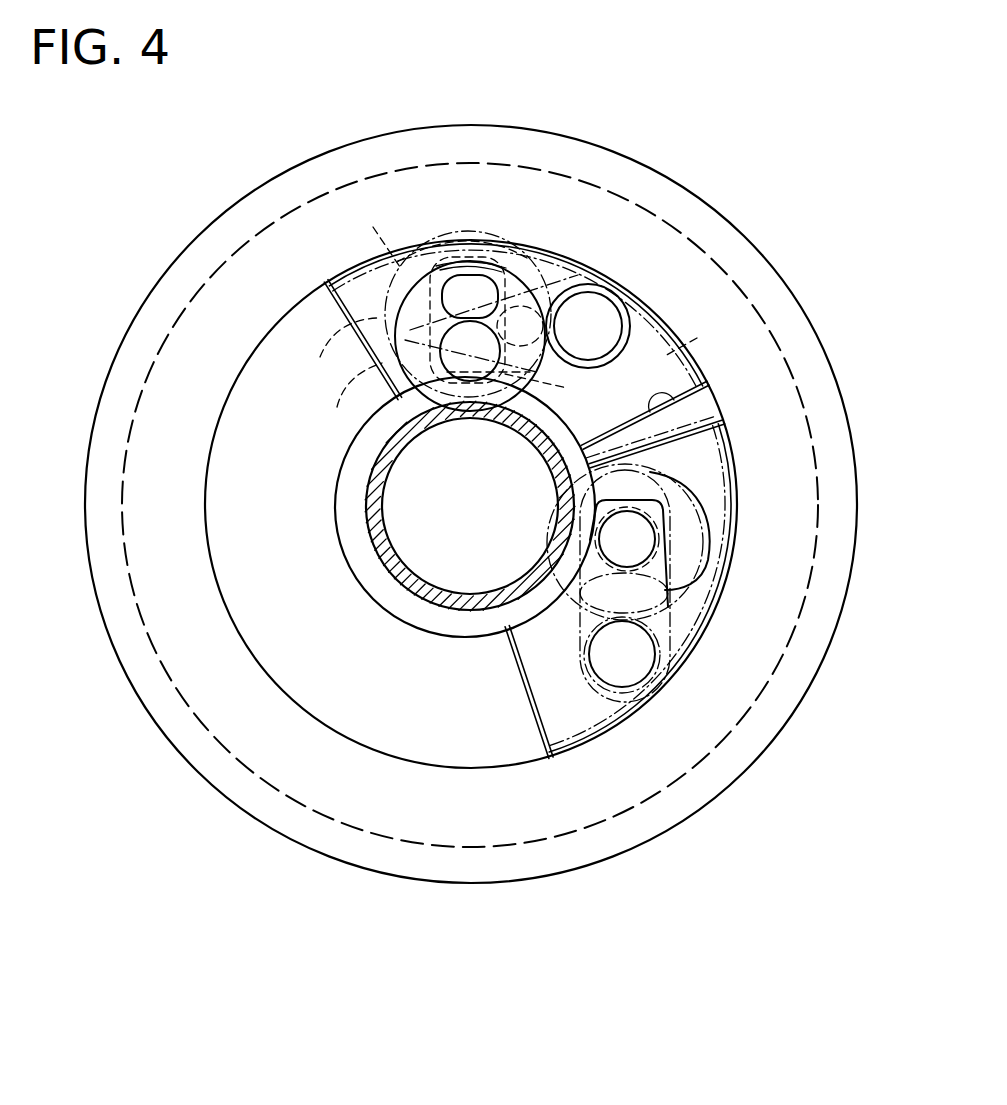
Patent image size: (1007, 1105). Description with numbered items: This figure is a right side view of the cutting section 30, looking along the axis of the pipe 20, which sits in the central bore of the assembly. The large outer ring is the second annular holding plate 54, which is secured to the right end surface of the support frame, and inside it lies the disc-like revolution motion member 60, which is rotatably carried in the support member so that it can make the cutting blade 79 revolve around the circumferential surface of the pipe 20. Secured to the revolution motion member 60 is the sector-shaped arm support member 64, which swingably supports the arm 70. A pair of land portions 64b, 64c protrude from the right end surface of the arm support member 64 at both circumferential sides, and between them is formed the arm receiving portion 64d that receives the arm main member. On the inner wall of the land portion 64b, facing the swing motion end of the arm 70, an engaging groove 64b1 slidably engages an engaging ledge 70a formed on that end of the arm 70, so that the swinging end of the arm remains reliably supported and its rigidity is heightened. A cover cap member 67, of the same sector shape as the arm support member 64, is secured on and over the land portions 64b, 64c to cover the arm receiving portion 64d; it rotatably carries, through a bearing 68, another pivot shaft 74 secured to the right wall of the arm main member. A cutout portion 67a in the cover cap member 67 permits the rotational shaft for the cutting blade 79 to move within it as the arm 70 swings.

The hydraulic unit 30 is at (203, 219).
The second annular holding plate 54 is at (846, 412).
The revolution motion member 60 is at (448, 737).
The pipe 20 is at (366, 513).
The cutting blade 79 is at (470, 420).
The arm support member 64 is at (676, 402).
The land portion 64b is at (428, 324).
The engaging groove 64b1 is at (369, 232).
The land portion 64c is at (707, 347).
The arm receiving portion 64d is at (523, 437).
The cover cap member 67 is at (548, 262).
The cutout portion 67a is at (470, 268).
The bearing 68 is at (614, 304).
The arm 70 is at (527, 273).
The engaging ledge 70a is at (388, 368).
The pivot shaft 74 is at (586, 322).